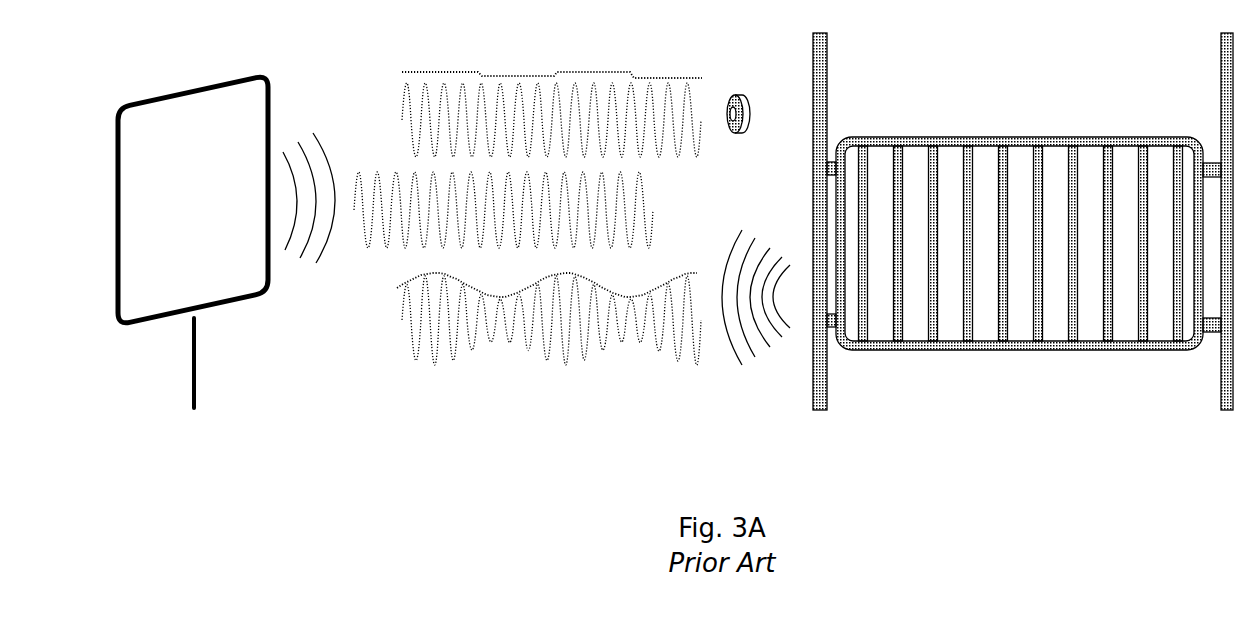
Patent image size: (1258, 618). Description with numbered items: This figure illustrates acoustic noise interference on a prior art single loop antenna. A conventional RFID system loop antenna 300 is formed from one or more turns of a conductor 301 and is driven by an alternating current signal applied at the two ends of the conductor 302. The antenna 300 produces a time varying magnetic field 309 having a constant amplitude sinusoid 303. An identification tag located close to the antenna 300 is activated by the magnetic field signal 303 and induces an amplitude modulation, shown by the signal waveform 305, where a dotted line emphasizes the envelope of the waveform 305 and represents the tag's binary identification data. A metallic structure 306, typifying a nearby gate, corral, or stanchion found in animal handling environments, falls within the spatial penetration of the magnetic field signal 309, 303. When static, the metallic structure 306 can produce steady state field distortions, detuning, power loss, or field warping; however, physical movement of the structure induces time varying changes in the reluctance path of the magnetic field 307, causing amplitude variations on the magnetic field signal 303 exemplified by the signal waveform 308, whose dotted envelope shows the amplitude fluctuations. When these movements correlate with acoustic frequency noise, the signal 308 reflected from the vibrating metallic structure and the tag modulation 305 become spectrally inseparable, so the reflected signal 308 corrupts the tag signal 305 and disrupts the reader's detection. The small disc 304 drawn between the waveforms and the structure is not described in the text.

The loop antenna 300 is at (260, 60).
The conductor 301 is at (255, 185).
The ends of the conductor 302 is at (175, 378).
The constant amplitude sinusoid 303 is at (672, 210).
The object 304 is at (748, 90).
The signal waveform 305 is at (548, 57).
The metallic structure 306 is at (950, 130).
The magnetic field reluctance path changes 307 is at (752, 372).
The reflected signal waveform 308 is at (570, 370).
The time varying magnetic field 309 is at (310, 275).